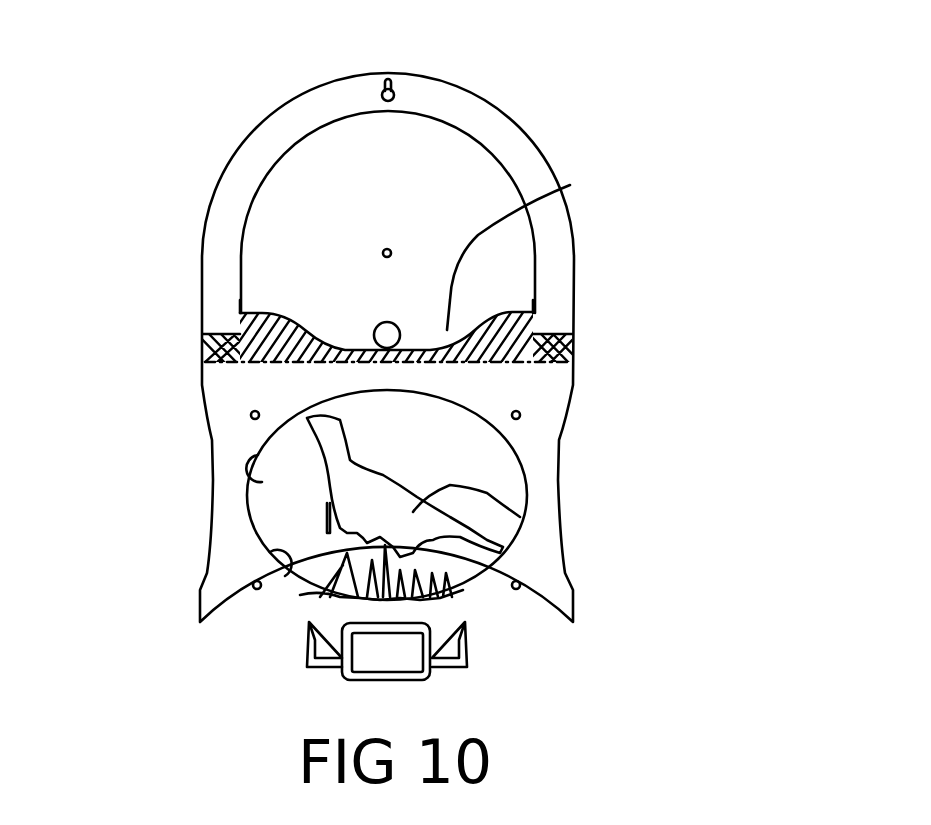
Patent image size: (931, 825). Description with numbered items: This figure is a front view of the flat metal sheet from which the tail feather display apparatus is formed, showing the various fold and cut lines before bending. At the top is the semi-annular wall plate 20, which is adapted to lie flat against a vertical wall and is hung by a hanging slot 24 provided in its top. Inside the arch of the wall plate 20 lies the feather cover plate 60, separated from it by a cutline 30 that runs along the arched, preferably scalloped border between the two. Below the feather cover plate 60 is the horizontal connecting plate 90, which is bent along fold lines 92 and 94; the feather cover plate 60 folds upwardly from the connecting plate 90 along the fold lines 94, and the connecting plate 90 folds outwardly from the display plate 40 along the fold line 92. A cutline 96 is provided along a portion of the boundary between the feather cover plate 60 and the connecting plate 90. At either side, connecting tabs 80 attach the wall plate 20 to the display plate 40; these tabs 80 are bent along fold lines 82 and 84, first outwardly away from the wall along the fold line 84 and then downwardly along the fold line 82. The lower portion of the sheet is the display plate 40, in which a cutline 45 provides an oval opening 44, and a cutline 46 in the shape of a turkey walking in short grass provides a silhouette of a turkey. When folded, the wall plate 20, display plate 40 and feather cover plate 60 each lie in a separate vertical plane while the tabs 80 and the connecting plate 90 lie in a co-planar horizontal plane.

The wall plate 20 is at (467, 105).
The hanging slot 24 is at (381, 95).
The cut line 30 is at (238, 226).
The feather cover plate 60 is at (445, 190).
The cutline 96 is at (570, 185).
The connecting plate 90 is at (512, 358).
The fold line 92 is at (278, 366).
The fold lines 94 is at (240, 313).
The connecting tabs 80 is at (207, 345).
The fold line 84 is at (212, 334).
The fold line 82 is at (205, 365).
The display plate 40 is at (228, 507).
The cutline in the shape of a turkey 46 is at (523, 515).
The oval opening 44 is at (262, 471).
The cutline 45 is at (283, 577).